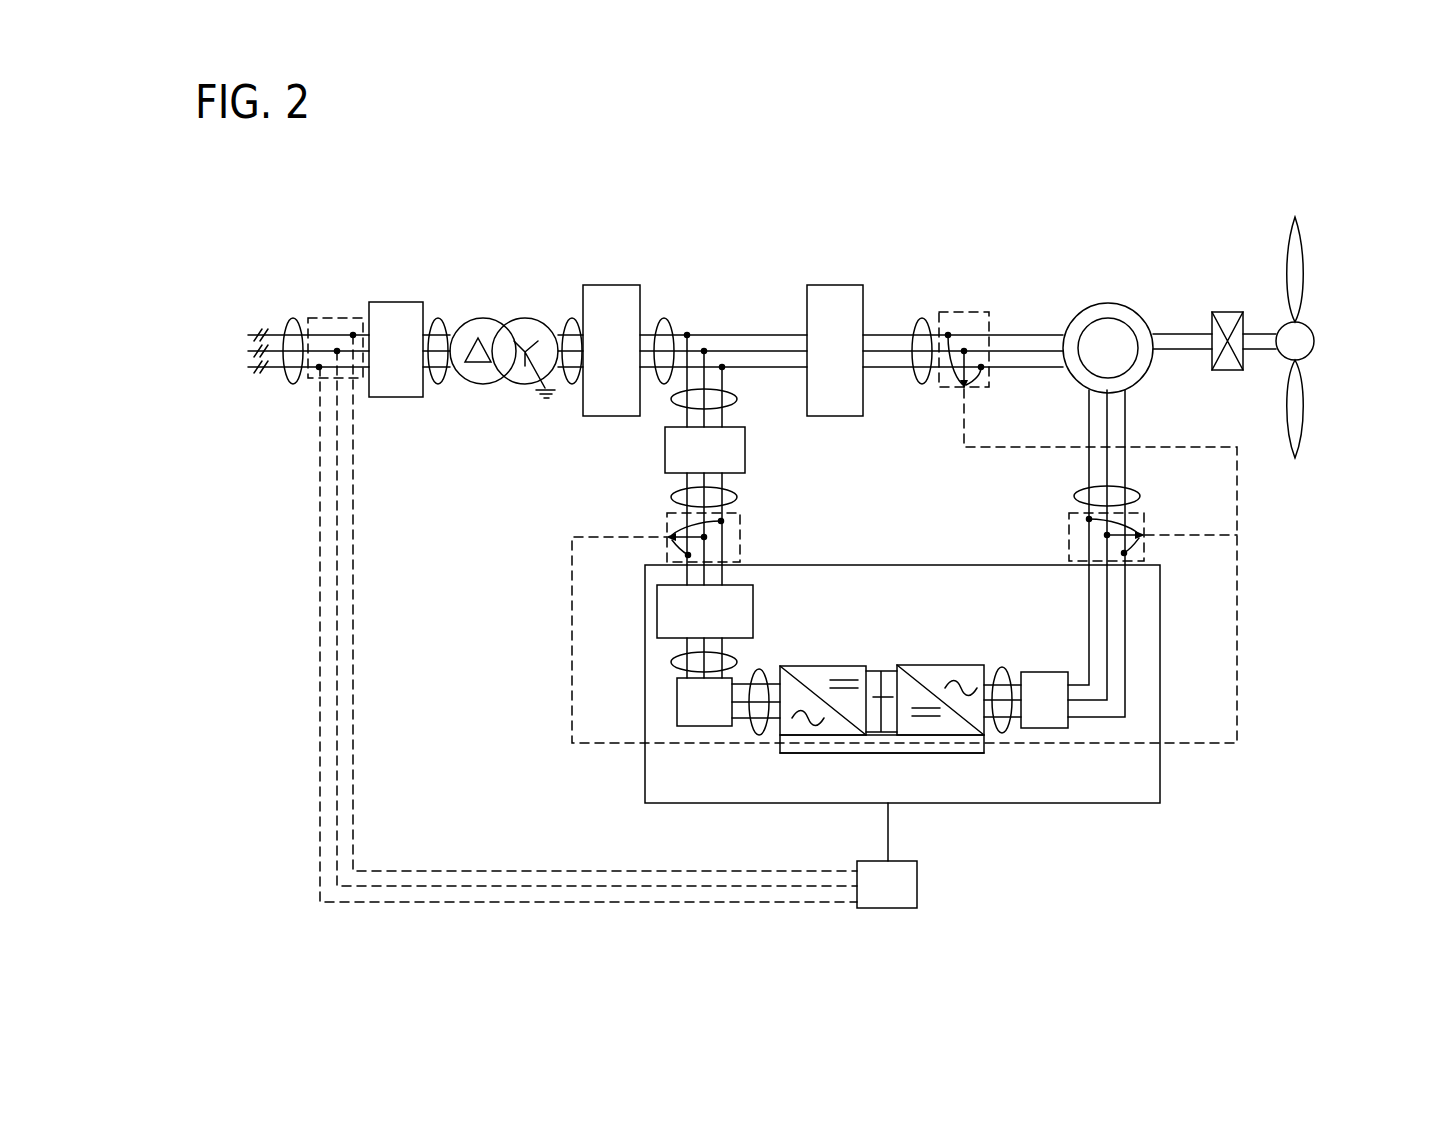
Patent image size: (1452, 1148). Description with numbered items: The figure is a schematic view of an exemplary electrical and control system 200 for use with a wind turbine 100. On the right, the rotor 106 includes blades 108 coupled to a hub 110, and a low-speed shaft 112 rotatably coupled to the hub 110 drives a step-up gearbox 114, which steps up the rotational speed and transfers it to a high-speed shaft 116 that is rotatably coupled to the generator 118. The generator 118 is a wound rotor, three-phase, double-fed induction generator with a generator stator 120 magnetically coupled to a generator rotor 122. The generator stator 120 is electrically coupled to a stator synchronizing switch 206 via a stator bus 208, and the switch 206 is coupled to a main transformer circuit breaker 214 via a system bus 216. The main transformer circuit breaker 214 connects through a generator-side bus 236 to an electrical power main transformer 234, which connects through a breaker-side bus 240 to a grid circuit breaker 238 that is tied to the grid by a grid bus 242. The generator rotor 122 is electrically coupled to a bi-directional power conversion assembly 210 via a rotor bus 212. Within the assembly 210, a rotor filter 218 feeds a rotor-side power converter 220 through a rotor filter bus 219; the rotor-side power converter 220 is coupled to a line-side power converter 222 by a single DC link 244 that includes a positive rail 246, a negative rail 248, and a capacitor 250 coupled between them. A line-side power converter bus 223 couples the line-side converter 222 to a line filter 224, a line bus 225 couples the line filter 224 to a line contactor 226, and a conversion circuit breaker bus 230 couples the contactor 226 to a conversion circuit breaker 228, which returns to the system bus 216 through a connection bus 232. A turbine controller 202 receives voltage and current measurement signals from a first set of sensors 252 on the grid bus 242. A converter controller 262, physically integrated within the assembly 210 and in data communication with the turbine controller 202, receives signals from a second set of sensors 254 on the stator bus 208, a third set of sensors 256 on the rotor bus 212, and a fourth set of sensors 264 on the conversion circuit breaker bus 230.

The wind turbine 100 is at (1283, 198).
The rotor 106 is at (1321, 316).
The blades 108 is at (1307, 275).
The hub 110 is at (1315, 341).
The low-speed shaft 112 is at (1258, 333).
The step-up gearbox 114 is at (1223, 312).
The high-speed shaft 116 is at (1180, 333).
The generator 118 is at (1110, 268).
The generator stator 120 is at (1106, 304).
The generator rotor 122 is at (1100, 330).
The electrical and control system 200 is at (343, 186).
The turbine controller 202 is at (887, 855).
The stator synchronizing switch 206 is at (838, 285).
The stator bus 208 is at (922, 318).
The power conversion assembly 210 is at (1162, 680).
The rotor bus 212 is at (1140, 496).
The main transformer circuit breaker 214 is at (612, 285).
The system bus 216 is at (664, 318).
The rotor filter 218 is at (1040, 680).
The rotor filter bus 219 is at (1004, 665).
The rotor-side power converter 220 is at (988, 732).
The line-side power converter 222 is at (775, 740).
The line-side power converter bus 223 is at (760, 668).
The line filter 224 is at (677, 700).
The line bus 225 is at (672, 662).
The line contactor 226 is at (657, 612).
The conversion circuit breaker 228 is at (745, 450).
The conversion circuit breaker bus 230 is at (737, 497).
The connection bus 232 is at (737, 399).
The electrical power main transformer 234 is at (525, 318).
The generator-side bus 236 is at (572, 318).
The grid circuit breaker 238 is at (388, 302).
The breaker-side bus 240 is at (438, 318).
The grid bus 242 is at (293, 318).
The DC link 244 is at (864, 624).
The positive rail 246 is at (897, 668).
The negative rail 248 is at (890, 753).
The capacitor 250 is at (880, 690).
The first set of voltage and electrical current sensors 252 is at (310, 388).
The second set of voltage and electrical current sensors 254 is at (978, 303).
The third set of voltage and electrical current sensors 256 is at (1058, 533).
The converter controller 262 is at (945, 746).
The fourth set of voltage and electrical current sensors 264 is at (740, 537).